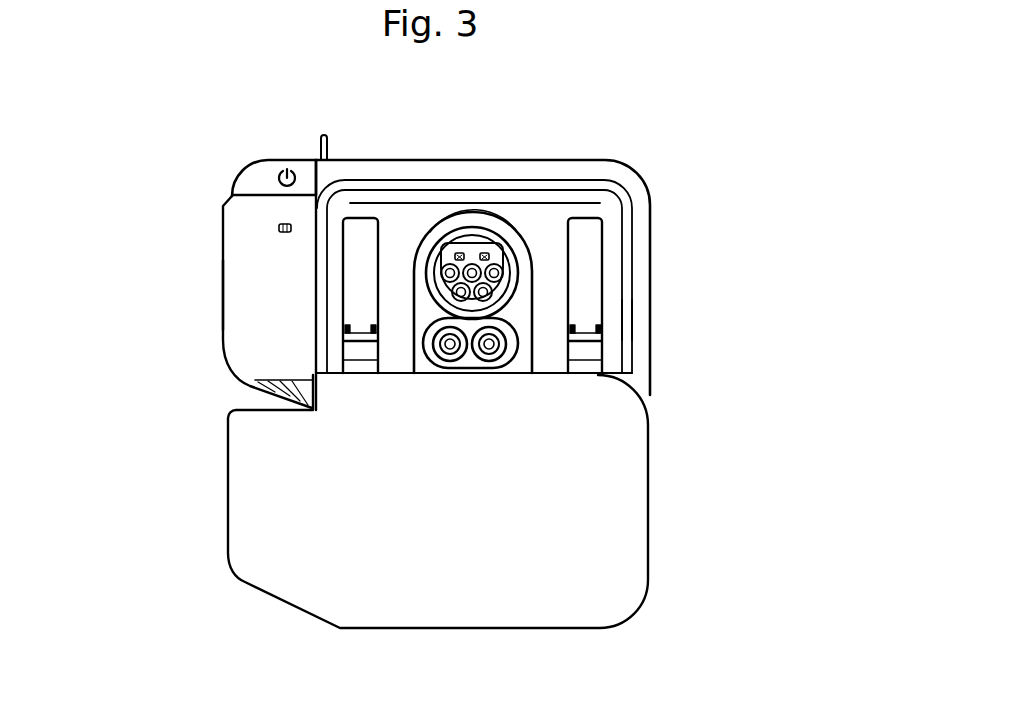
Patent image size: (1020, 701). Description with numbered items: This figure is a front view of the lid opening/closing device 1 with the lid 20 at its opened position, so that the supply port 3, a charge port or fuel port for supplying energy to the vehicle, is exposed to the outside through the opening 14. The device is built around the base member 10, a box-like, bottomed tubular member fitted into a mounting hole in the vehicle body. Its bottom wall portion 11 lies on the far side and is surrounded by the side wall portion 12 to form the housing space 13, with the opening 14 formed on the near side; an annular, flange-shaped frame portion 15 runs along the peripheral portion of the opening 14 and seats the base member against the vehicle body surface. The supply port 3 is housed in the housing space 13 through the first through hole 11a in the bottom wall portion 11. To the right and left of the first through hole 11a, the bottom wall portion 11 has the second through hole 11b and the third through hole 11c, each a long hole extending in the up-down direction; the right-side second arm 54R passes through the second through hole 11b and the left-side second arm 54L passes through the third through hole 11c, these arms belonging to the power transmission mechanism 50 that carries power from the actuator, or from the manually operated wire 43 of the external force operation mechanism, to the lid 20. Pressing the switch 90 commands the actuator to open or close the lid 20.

The lid opening/closing device 1 is at (654, 162).
The supply port 3 is at (487, 228).
The base member 10 is at (222, 222).
The bottom wall portion 11 is at (553, 267).
The first through hole 11a is at (463, 230).
The second through hole 11b is at (591, 266).
The third through hole 11c is at (350, 300).
The side wall portion 12 is at (320, 240).
The housing space 13 is at (556, 223).
The opening 14 is at (405, 213).
The frame portion 15 is at (255, 255).
The lid 20 is at (615, 527).
The wire 43 is at (318, 147).
The power transmission mechanism 50 is at (605, 320).
The second arm 54L is at (372, 355).
The second arm 54R is at (588, 355).
The switch 90 is at (262, 178).